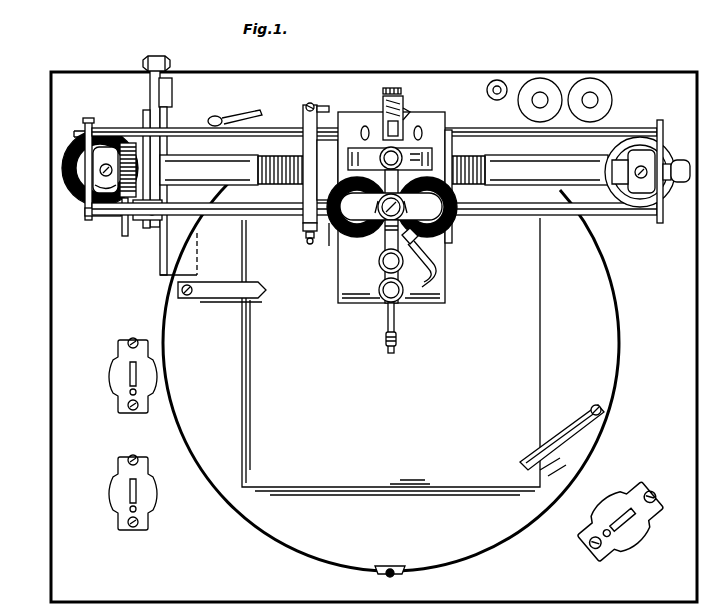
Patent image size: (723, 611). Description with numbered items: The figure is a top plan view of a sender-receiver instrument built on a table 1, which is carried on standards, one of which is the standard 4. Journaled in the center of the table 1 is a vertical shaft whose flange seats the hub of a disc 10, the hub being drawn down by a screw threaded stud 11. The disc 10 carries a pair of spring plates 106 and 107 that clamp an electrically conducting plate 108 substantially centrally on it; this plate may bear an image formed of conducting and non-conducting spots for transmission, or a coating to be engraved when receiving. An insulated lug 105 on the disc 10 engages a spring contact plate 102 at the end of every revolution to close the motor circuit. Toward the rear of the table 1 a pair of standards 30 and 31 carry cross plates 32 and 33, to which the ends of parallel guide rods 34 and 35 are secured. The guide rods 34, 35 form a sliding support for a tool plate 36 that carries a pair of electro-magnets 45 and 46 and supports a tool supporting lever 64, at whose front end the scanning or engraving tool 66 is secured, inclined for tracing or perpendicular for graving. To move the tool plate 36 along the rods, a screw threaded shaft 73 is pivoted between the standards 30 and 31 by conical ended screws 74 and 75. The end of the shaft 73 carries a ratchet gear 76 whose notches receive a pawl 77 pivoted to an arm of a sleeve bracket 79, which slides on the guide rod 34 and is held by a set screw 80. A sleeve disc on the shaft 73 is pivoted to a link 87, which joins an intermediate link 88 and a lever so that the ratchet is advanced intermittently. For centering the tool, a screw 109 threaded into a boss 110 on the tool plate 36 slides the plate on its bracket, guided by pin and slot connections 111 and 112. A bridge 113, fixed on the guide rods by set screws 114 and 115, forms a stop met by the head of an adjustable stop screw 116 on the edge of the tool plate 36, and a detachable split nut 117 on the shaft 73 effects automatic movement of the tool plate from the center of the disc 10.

The table 1 is at (52, 268).
The standard 4 is at (172, 38).
The disc 10 is at (166, 321).
The screw threaded stud 11 is at (329, 62).
The standard 30 is at (107, 148).
The standard 31 is at (650, 194).
The cross plate 32 is at (76, 134).
The cross plate 33 is at (661, 123).
The guide rod 34 is at (106, 128).
The guide rod 35 is at (105, 217).
The tool plate 36 is at (446, 290).
The electro-magnet 45 is at (358, 236).
The electro-magnet 46 is at (440, 256).
The tool supporting lever 64 is at (395, 324).
The scanning or engraving tool 66 is at (397, 341).
The screw threaded shaft 73 is at (565, 154).
The conical ended screw 74 is at (64, 168).
The conical ended screw 75 is at (629, 160).
The ratchet gear 76 is at (130, 143).
The pawl 77 is at (124, 228).
The sleeve bracket 79 is at (147, 231).
The set screw 80 is at (163, 216).
The link 87 is at (146, 57).
The intermediate link 88 is at (162, 85).
The spring contact plate 102 is at (329, 108).
The insulated lug 105 is at (394, 577).
The spring plate 106 is at (180, 296).
The spring plate 107 is at (598, 418).
The electrically conducting plate 108 is at (242, 355).
The screw 109 is at (391, 87).
The internally screw-threaded boss 110 is at (408, 112).
The pin and slot connection 111 is at (366, 126).
The pin and slot connection 112 is at (421, 128).
The bridge 113 is at (302, 227).
The set screw 114 is at (310, 103).
The set screw 115 is at (306, 236).
The adjustable stop screw 116 is at (326, 249).
The detachable split nut 117 is at (318, 157).